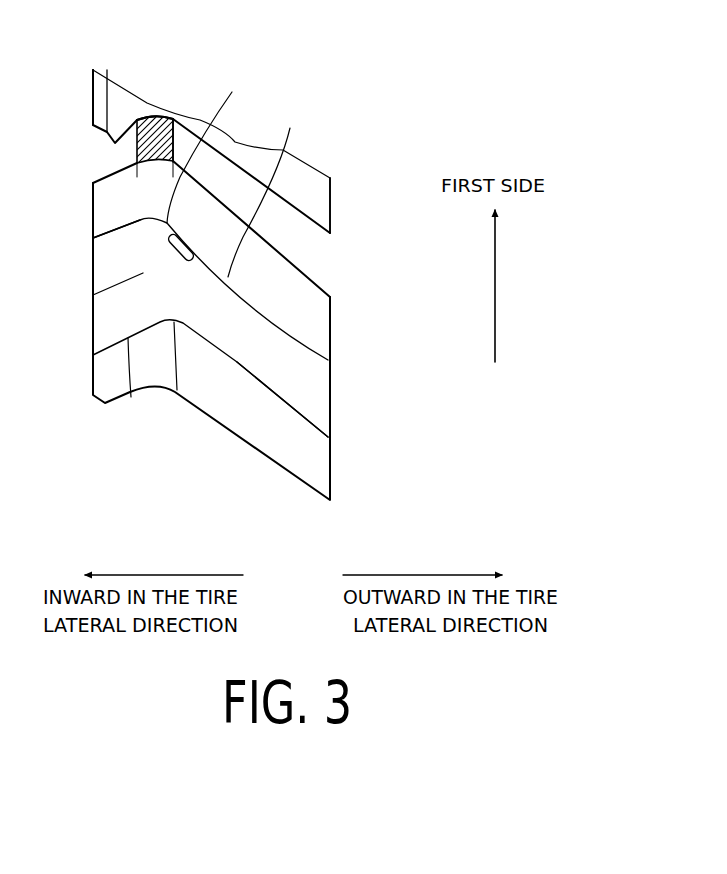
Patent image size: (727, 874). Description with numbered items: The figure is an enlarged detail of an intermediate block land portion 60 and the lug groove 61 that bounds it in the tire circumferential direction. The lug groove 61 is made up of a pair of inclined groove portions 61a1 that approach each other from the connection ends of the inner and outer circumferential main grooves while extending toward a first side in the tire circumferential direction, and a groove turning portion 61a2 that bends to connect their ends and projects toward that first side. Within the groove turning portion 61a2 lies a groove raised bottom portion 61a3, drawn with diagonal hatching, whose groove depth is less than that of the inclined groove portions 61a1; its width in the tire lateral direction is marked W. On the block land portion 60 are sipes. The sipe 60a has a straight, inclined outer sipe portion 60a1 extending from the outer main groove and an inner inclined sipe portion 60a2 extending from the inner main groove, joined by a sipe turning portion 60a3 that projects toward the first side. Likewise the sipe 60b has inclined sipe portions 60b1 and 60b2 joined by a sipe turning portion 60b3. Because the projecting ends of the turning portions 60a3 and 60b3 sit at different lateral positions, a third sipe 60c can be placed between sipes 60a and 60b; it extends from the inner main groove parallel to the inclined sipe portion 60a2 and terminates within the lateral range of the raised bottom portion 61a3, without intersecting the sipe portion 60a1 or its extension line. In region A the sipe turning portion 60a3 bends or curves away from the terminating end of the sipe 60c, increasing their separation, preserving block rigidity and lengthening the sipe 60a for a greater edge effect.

The intermediate block land portion 60 is at (338, 338).
The sipe 60a is at (288, 311).
The inclined sipe portion 60a1 is at (271, 190).
The inclined sipe portion 60a2 is at (110, 230).
The sipe turning portion 60a3 is at (213, 147).
The sipe 60b is at (270, 397).
The inclined sipe portion 60b1 is at (310, 420).
The inclined sipe portion 60b2 is at (131, 397).
The sipe turning portion 60b3 is at (177, 390).
The sipe 60c is at (108, 294).
The lug groove 61 is at (310, 247).
The inclined groove portion 61a1 is at (107, 78).
The groove turning portion 61a2 is at (168, 118).
The groove raised bottom portion 61a3 is at (149, 118).
The width of the raised bottom portion W is at (172, 173).
The region A is at (178, 251).